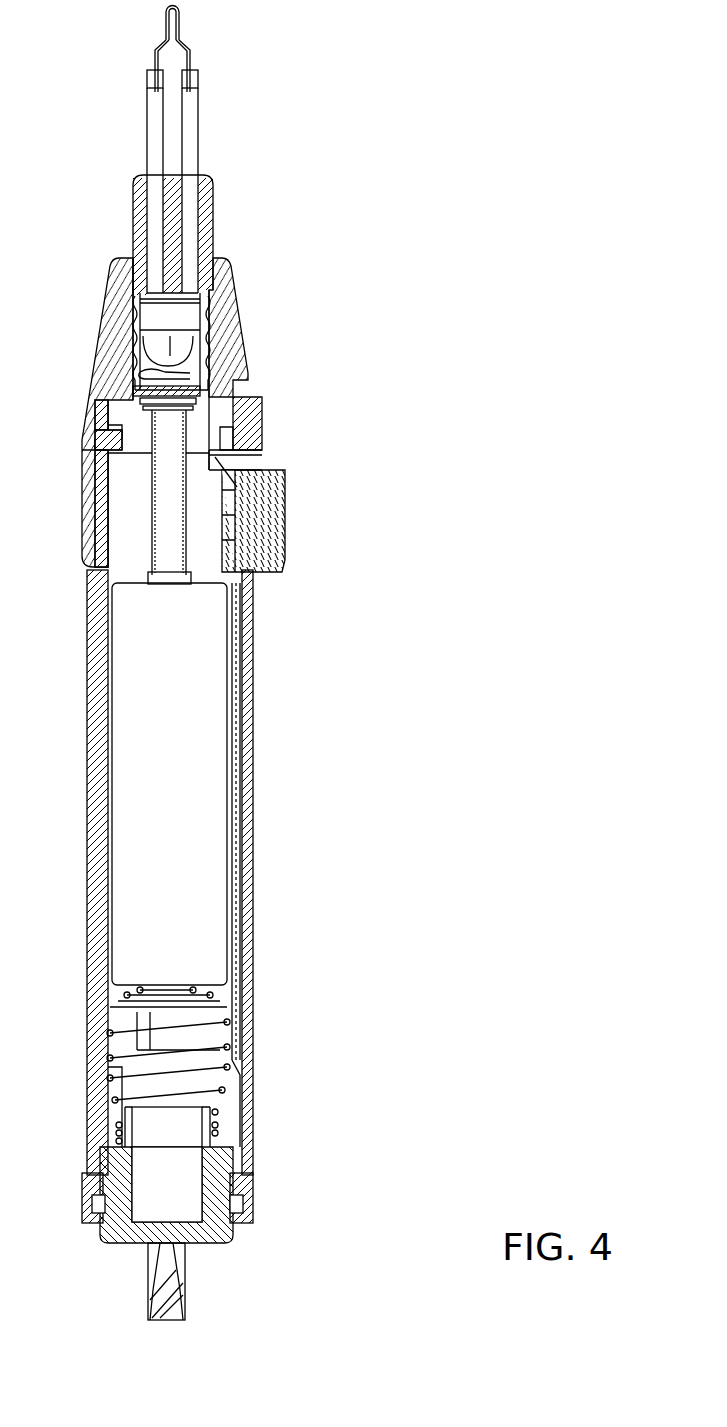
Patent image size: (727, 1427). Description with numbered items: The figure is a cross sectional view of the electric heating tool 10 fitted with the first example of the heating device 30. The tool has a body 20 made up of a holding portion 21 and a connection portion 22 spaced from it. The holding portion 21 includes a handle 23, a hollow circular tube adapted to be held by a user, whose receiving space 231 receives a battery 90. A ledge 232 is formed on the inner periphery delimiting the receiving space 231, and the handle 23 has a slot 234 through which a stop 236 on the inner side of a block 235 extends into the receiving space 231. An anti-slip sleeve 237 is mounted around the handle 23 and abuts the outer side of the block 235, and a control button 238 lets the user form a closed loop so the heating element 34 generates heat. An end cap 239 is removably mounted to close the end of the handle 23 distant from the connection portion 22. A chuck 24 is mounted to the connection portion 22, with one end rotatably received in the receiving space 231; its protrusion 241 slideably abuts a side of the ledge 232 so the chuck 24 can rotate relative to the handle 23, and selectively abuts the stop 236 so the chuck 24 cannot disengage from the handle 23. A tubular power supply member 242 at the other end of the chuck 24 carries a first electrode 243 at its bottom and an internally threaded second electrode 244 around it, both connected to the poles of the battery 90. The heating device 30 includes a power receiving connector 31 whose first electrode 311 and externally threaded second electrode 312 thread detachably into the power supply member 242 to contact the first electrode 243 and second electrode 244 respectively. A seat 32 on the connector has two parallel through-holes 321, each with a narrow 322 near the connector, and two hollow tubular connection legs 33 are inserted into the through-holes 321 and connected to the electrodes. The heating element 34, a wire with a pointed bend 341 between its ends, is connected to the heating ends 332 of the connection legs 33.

The electric heating tool 10 is at (448, 226).
The body 20 is at (358, 749).
The holding portion 21 is at (275, 1105).
The connection portion 22 is at (312, 452).
The handle 23 is at (250, 883).
The chuck 24 is at (115, 377).
The heating device 30 is at (324, 236).
The power receiving connector 31 is at (228, 287).
The seat 32 is at (211, 233).
The connection legs 33 is at (154, 111).
The heating element 34 is at (126, 54).
The battery 90 is at (215, 716).
The receiving space 231 is at (122, 546).
The ledge 232 is at (187, 378).
The slot 234 is at (100, 465).
The block 235 is at (97, 440).
The stop 236 is at (113, 425).
The anti-slip sleeve 237 is at (84, 520).
The control button 238 is at (268, 512).
The end cap 239 is at (233, 1232).
The protrusion 241 is at (255, 420).
The power supply member 242 is at (227, 370).
The first electrode 243 is at (133, 354).
The second electrode 244 is at (152, 312).
The first electrode 311 is at (184, 341).
The second electrode 312 is at (153, 310).
The through-holes 321 is at (170, 200).
The narrow 322 is at (135, 257).
The heating end 332 is at (150, 78).
The pointed bend 341 is at (170, 6).